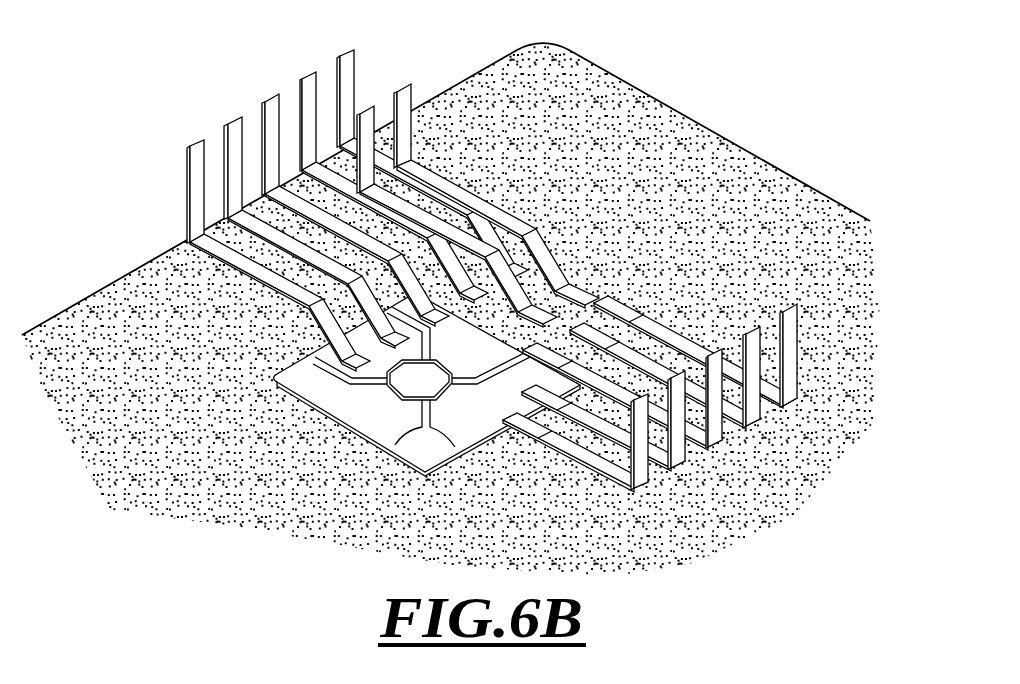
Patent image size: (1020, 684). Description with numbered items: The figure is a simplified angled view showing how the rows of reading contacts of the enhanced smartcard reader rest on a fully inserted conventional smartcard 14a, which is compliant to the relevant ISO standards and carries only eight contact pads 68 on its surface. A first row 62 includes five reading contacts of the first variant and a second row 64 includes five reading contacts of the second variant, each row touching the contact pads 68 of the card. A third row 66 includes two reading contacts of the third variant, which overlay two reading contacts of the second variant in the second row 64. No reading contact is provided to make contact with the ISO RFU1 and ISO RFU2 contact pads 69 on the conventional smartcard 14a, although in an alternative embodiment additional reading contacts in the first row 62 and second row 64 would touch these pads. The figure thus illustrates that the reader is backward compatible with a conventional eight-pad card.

The conventional smartcard 14a is at (750, 155).
The first row 62 is at (750, 309).
The second row 64 is at (370, 79).
The third row 66 is at (565, 272).
The contact pads 68 is at (383, 423).
The ISO RFU1 and ISO RFU2 contact pads 69 is at (352, 398).